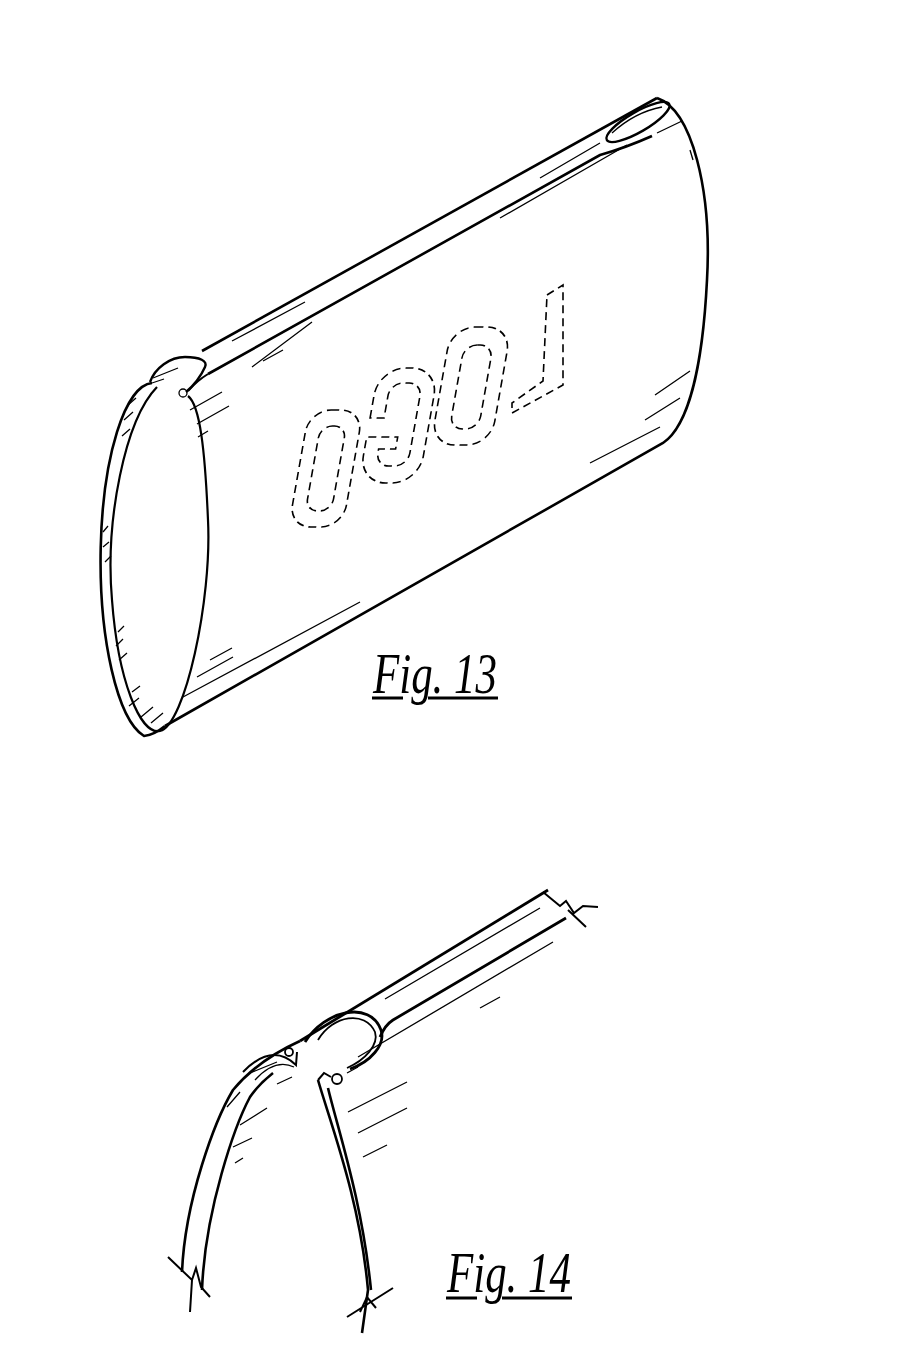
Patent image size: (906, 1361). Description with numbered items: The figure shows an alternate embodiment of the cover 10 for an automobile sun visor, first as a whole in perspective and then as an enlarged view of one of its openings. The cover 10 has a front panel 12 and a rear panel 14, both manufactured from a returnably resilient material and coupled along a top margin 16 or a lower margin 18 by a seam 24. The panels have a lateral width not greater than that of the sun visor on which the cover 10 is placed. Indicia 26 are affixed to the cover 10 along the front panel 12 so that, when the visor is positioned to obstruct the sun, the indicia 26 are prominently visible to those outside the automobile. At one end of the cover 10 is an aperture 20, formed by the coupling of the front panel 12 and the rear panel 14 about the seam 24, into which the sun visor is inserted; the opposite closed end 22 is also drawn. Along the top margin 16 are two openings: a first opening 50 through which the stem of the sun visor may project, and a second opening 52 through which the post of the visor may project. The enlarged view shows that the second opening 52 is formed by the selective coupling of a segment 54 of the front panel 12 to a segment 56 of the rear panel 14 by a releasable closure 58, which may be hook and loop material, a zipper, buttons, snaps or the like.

In FIG. 13, the cover 10 is at (655, 72).
In FIG. 13, the front panel 12 is at (150, 433).
In FIG. 13, the rear panel 14 is at (643, 387).
In FIG. 13, the top margin 16 is at (289, 306).
In FIG. 14, the top margin 16 is at (420, 983).
In FIG. 13, the lower margin 18 is at (577, 494).
In FIG. 13, the aperture 20 is at (152, 543).
In FIG. 13, the closed end edge 22 is at (710, 262).
In FIG. 13, the seam 24 is at (528, 182).
In FIG. 13, the indicia 26 is at (445, 362).
In FIG. 13, the first opening 50 is at (634, 128).
In FIG. 13, the second opening 52 is at (178, 376).
In FIG. 14, the second opening 52 is at (340, 1070).
In FIG. 14, the segment of the front panel 54 is at (333, 1090).
In FIG. 14, the segment of the rear panel 56 is at (250, 1095).
In FIG. 14, the releasable closure 58 is at (320, 1036).